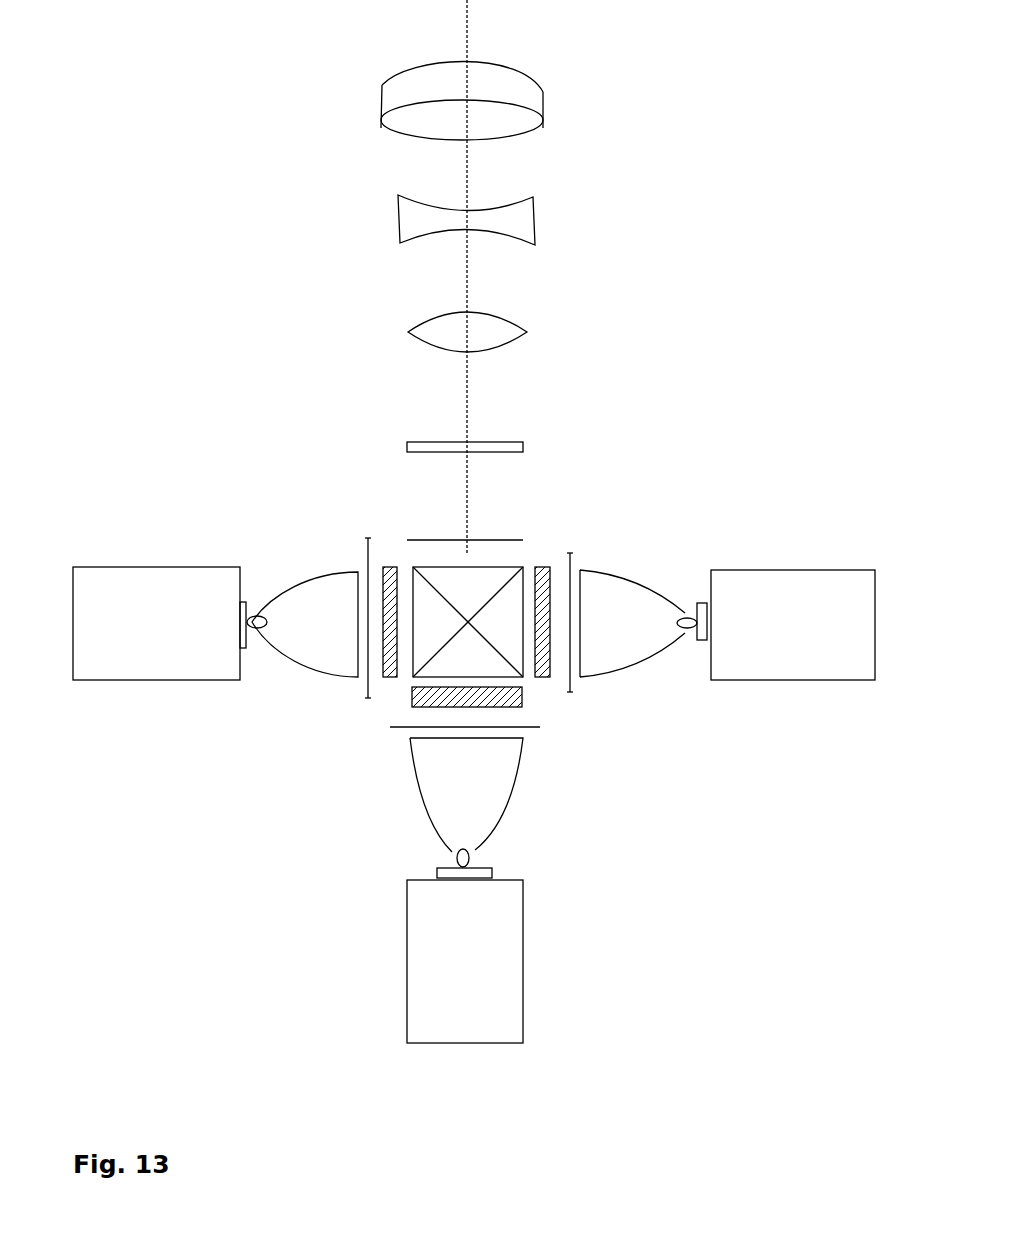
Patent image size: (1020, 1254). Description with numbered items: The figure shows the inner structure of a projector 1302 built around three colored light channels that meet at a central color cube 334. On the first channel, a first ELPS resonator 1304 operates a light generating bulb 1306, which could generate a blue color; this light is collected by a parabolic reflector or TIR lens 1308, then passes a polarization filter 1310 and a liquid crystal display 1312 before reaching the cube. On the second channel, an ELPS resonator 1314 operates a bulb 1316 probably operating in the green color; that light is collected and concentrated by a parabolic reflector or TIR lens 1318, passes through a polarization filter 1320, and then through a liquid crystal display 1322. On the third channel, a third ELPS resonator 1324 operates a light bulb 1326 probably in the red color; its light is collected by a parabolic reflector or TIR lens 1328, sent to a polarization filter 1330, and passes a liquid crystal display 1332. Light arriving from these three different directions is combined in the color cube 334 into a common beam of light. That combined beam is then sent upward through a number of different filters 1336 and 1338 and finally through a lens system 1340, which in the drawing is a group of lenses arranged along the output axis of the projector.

The projector 1302 is at (218, 300).
The first ELPS resonator 1304 is at (115, 680).
The light generating bulb 1306 is at (255, 603).
The parabolic reflector or TIR lens 1308 is at (323, 660).
The polarization filter 1310 is at (368, 698).
The liquid crystal display 1312 is at (393, 677).
The ELPS resonator 1314 is at (523, 997).
The bulb 1316 is at (475, 862).
The parabolic reflector or TIR lens 1318 is at (513, 792).
The polarization filter 1320 is at (537, 727).
The liquid crystal display 1322 is at (522, 698).
The third ELPS resonator 1324 is at (777, 680).
The light bulb 1326 is at (693, 608).
The parabolic reflector or TIR lens 1328 is at (645, 587).
The polarization filter 1330 is at (572, 565).
The liquid crystal display 1332 is at (547, 567).
The color cube 334 is at (413, 567).
The filter 1336 is at (503, 536).
The filter 1338 is at (503, 442).
The lens system 1340 is at (567, 73).